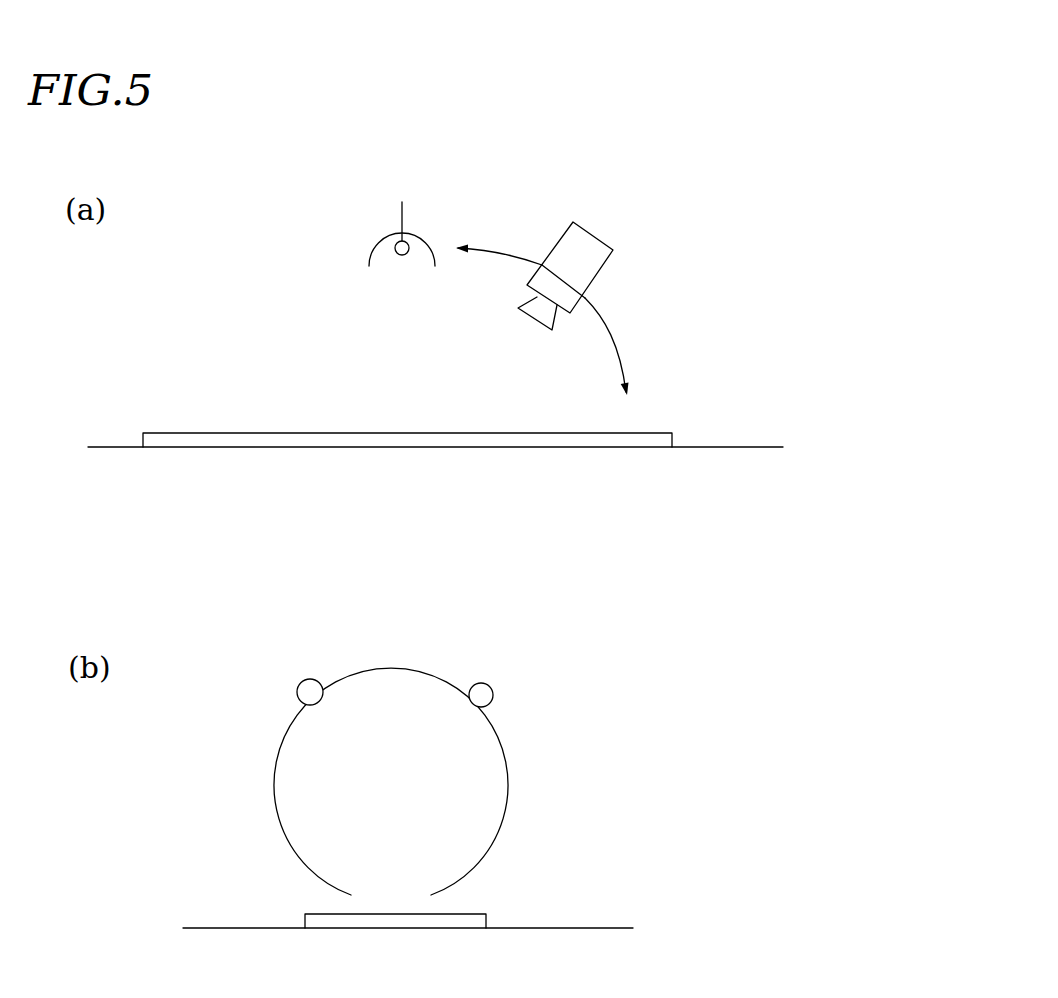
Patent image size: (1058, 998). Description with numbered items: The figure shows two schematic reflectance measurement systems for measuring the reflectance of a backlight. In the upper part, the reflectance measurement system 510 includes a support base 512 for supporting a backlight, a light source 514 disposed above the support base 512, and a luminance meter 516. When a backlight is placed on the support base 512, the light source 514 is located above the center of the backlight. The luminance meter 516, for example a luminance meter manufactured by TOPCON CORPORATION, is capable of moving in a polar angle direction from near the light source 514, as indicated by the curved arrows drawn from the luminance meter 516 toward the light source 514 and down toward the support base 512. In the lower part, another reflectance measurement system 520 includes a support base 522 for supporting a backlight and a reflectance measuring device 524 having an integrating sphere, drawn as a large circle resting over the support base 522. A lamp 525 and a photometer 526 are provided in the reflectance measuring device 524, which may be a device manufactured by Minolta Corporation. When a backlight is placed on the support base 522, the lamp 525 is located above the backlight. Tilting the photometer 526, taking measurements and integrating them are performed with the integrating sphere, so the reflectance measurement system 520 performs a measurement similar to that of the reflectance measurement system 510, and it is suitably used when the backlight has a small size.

The reflectance measurement system 510 is at (721, 186).
The support base 512 is at (775, 473).
The light source 514 is at (426, 221).
The luminance meter 516 is at (613, 250).
The reflectance measurement system 520 is at (541, 644).
The support base 522 is at (623, 950).
The reflectance measuring device 524 is at (505, 800).
The lamp 525 is at (311, 686).
The photometer 526 is at (492, 685).